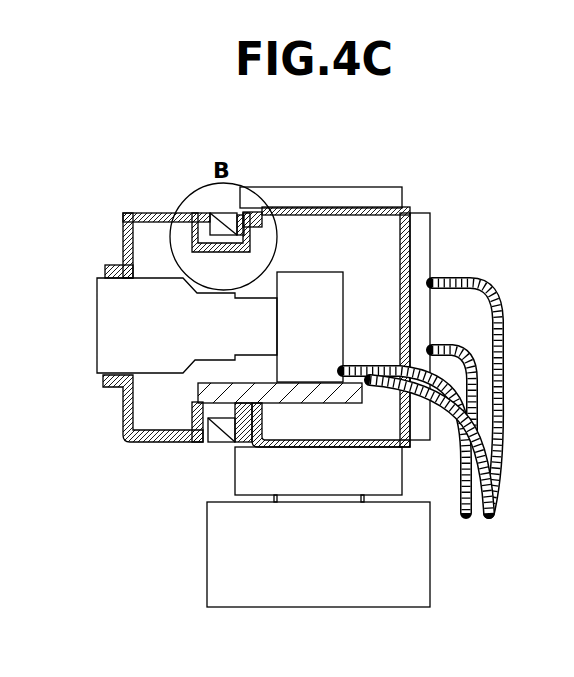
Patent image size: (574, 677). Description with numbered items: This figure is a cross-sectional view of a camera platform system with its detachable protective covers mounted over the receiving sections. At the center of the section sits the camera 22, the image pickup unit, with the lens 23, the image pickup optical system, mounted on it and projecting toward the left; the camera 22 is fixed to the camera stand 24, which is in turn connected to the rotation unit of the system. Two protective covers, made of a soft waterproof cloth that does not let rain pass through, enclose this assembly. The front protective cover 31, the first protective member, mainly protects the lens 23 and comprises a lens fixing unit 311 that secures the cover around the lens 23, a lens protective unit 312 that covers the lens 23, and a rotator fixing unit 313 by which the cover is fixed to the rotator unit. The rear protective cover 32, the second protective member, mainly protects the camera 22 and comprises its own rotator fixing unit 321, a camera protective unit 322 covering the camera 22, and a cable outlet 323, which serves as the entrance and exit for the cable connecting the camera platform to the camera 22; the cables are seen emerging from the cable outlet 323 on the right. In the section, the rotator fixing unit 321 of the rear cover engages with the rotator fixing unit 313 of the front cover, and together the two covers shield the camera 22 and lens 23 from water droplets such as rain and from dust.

The front protective cover 31 is at (162, 273).
The lens fixing unit 311 is at (107, 264).
The lens protective unit 312 is at (147, 215).
The rotator fixing unit 313 is at (200, 222).
The rear protective cover 32 is at (360, 356).
The rotator fixing unit 321 is at (248, 214).
The camera protective unit 322 is at (333, 200).
The cable outlet 323 is at (437, 345).
The camera 22 is at (323, 285).
The lens 23 is at (118, 347).
The camera stand 24 is at (305, 393).